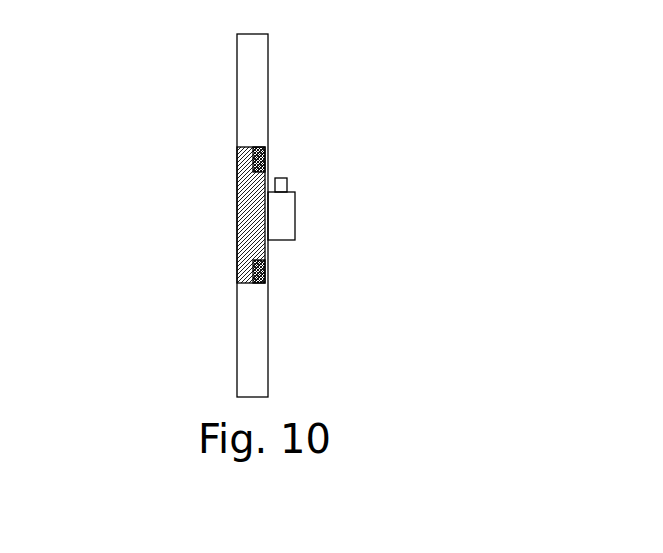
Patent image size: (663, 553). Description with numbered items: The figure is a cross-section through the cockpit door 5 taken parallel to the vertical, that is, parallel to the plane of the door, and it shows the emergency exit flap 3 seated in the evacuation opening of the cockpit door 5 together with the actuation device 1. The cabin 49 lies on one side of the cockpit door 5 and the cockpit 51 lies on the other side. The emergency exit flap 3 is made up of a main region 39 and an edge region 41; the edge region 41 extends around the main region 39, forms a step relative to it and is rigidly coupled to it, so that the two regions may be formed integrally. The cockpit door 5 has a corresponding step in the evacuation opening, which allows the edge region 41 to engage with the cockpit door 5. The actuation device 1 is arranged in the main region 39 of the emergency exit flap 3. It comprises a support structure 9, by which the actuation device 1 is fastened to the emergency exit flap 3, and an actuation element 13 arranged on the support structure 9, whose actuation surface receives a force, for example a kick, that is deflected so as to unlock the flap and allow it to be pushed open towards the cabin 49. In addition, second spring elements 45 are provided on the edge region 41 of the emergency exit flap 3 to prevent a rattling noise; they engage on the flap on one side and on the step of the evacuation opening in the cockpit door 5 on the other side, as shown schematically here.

The actuation device 1 is at (298, 216).
The emergency exit flap 3 is at (237, 196).
The cockpit door 5 is at (270, 73).
The support structure 9 is at (297, 236).
The actuation element 13 is at (295, 182).
The main region 39 is at (240, 212).
The edge region 41 is at (237, 155).
The second spring elements 45 is at (266, 148).
The cabin 49 is at (118, 396).
The cockpit 51 is at (398, 394).